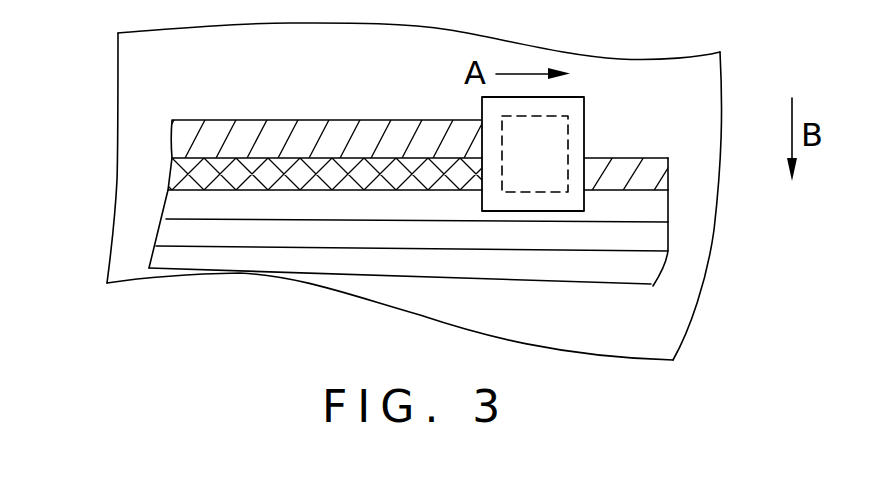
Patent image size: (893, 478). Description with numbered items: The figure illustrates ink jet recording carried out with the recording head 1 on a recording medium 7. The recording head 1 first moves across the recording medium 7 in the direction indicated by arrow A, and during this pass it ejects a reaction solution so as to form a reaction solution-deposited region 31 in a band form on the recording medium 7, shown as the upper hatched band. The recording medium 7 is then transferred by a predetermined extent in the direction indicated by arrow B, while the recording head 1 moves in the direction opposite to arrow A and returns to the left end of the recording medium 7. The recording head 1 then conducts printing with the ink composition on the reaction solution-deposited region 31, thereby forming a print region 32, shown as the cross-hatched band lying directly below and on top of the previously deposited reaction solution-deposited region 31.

The recording head 1 is at (575, 105).
The recording medium 7 is at (672, 330).
The reaction solution-deposited region 31 is at (172, 140).
The print region 32 is at (172, 177).